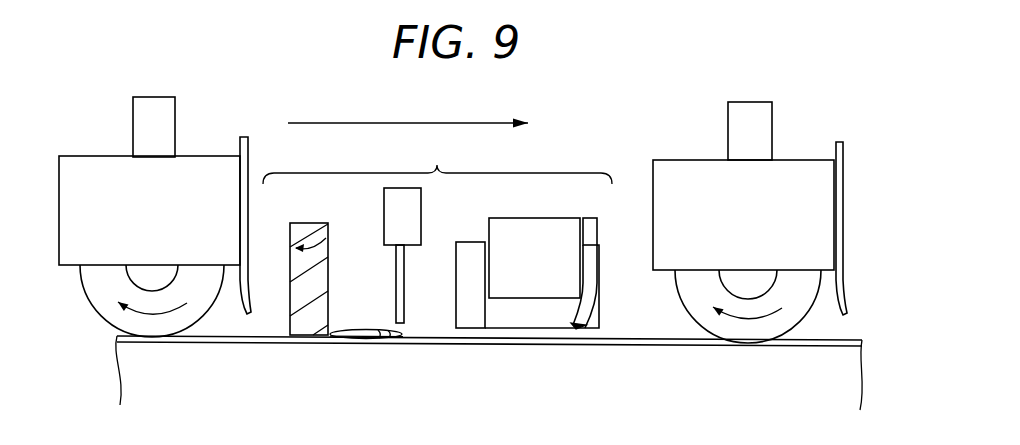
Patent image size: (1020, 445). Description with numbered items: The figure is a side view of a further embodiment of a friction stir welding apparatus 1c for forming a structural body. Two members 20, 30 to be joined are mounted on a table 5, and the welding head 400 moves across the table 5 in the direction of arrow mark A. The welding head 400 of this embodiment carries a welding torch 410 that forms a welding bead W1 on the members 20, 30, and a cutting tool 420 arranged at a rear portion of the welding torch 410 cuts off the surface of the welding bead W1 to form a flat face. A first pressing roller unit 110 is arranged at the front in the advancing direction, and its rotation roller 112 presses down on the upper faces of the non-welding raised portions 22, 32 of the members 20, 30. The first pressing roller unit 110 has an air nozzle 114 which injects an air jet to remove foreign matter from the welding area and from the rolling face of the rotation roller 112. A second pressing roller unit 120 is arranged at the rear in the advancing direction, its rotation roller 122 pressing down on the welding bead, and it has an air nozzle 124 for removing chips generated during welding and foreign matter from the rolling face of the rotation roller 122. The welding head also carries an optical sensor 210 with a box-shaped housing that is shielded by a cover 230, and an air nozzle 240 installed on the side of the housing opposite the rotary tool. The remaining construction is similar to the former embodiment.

The friction stir welding apparatus 1c is at (582, 124).
The arrow mark direction A is at (408, 110).
The table 5 is at (417, 388).
The member 20 is at (516, 360).
The member 30 is at (750, 366).
The non-welding raised portion 22 is at (517, 351).
The non-welding raised portion 32 is at (863, 338).
The first pressing roller unit 110 is at (801, 176).
The rotation roller 112 is at (684, 306).
The air nozzle 114 is at (848, 305).
The second pressing roller unit 120 is at (200, 168).
The pressing roller 122 is at (180, 316).
The air nozzle 124 is at (250, 180).
The optical sensor 210 is at (539, 231).
The cover 230 is at (472, 250).
The air nozzle 240 is at (586, 335).
The welding head 400 is at (437, 163).
The welding torch 410 is at (384, 227).
The cutting tool 420 is at (298, 224).
The welding bead W1 is at (360, 330).